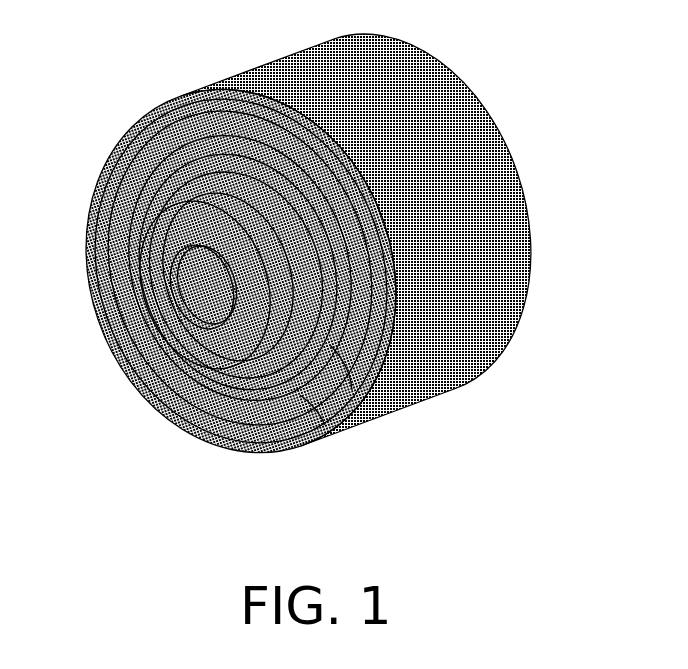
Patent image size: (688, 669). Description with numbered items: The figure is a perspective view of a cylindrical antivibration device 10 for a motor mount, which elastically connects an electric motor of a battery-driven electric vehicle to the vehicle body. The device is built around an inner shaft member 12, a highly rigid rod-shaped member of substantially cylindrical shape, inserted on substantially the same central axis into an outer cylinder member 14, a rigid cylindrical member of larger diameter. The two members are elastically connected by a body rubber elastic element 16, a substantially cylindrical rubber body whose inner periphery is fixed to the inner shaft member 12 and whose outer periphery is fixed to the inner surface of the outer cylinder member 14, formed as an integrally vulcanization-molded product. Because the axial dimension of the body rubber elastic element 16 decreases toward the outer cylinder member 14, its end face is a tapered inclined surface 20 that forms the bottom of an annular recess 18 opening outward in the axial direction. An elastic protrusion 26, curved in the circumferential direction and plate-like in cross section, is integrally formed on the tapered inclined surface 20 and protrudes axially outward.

The cylindrical antivibration device 10 is at (322, 255).
The inner shaft member 12 is at (170, 312).
The outer cylinder member 14 is at (298, 83).
The body rubber elastic element 16 is at (347, 373).
The annular recess 18 is at (322, 405).
The tapered inclined surface 20 is at (192, 121).
The elastic protrusion 26 is at (137, 233).